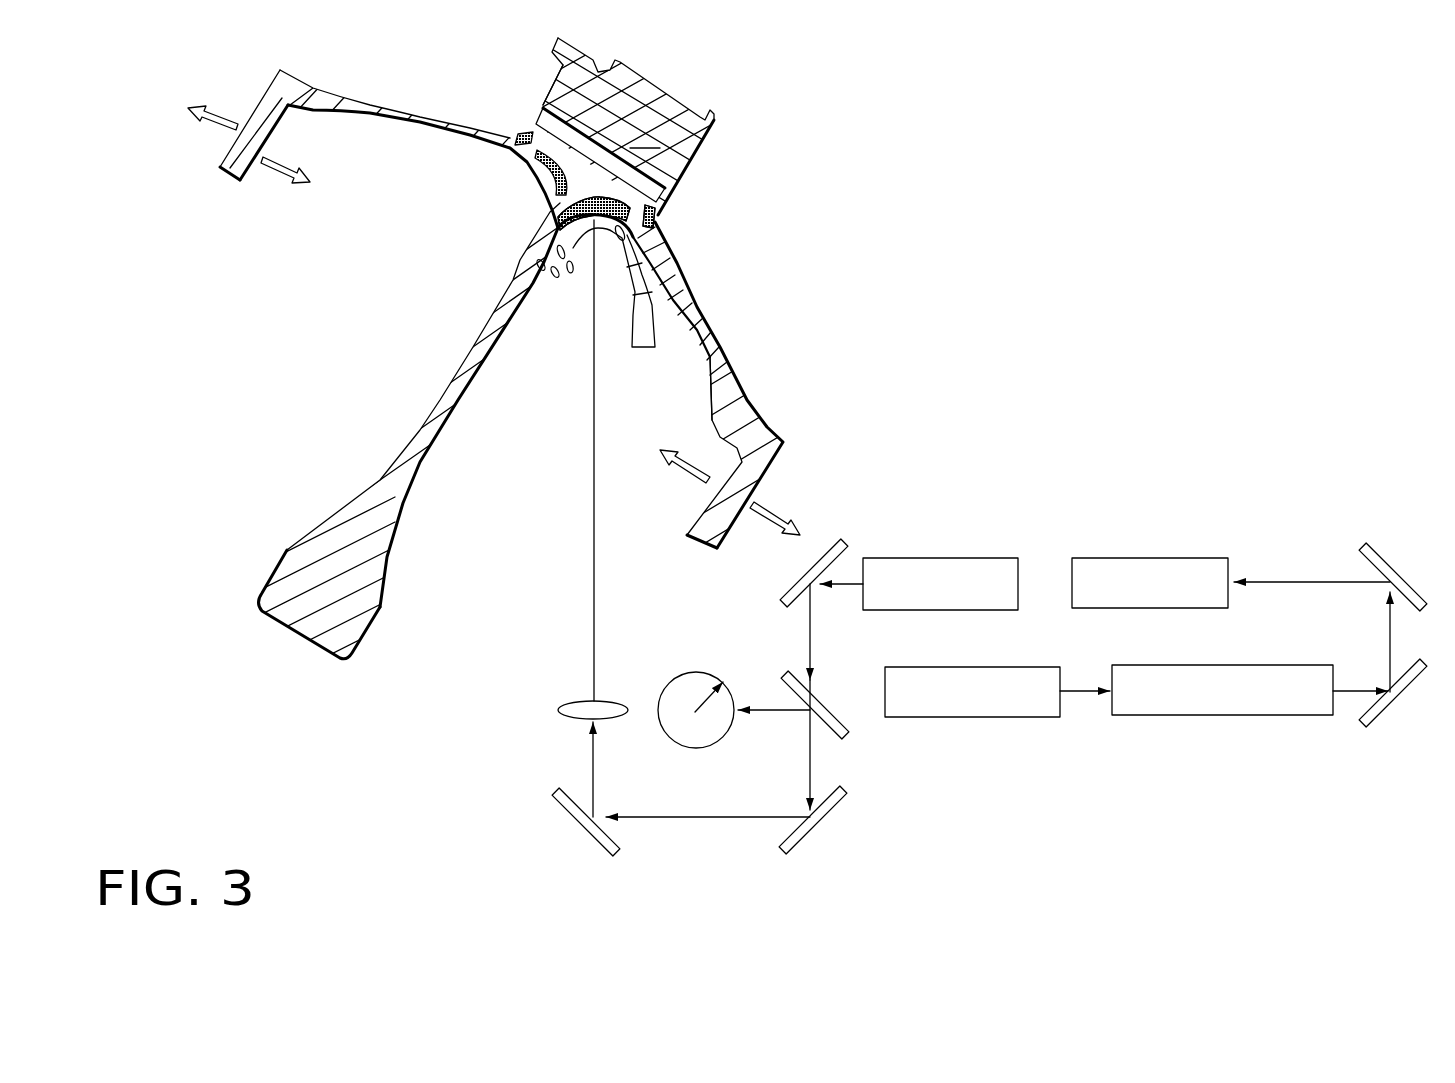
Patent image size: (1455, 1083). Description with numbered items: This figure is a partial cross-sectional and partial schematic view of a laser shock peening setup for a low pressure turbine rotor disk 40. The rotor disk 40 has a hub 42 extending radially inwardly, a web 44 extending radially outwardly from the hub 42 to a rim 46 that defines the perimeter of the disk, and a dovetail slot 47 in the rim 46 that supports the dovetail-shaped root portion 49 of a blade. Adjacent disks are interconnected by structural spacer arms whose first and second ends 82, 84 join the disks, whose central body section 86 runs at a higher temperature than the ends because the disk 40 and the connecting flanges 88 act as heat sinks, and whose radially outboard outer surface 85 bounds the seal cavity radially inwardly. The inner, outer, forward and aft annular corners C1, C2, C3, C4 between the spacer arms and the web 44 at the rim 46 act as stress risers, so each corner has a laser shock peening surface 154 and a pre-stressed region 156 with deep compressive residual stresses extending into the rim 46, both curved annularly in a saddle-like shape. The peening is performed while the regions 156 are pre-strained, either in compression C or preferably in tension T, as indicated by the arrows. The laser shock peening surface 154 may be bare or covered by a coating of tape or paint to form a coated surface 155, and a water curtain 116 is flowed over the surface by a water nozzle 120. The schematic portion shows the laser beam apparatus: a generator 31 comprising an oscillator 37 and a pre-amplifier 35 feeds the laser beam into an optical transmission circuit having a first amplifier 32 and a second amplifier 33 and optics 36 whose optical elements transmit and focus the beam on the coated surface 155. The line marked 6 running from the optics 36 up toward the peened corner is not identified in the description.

The rotor disk 40 is at (400, 446).
The hub 42 is at (290, 563).
The web 44 is at (467, 360).
The rim 46 is at (560, 147).
The dovetail slot 47 is at (600, 143).
The dovetail-shaped root portion 49 is at (625, 117).
The spacer arm first end 82 is at (510, 153).
The spacer arm second end 84 is at (313, 108).
The radially outboard outer surface 85 is at (727, 357).
The spacer arm body section 86 is at (460, 127).
The connecting flange 88 is at (240, 182).
The water curtain 116 is at (656, 258).
The water nozzle 120 is at (633, 280).
The laser shock peening surface 154 is at (660, 224).
The laser shock peening coated surface 155 is at (587, 228).
The pre-stressed region 156 is at (558, 208).
The inner annular corner C1 is at (540, 178).
The outer annular corner C2 is at (517, 138).
The forward annular corner C3 is at (557, 217).
The aft annular corner C4 is at (657, 218).
The tension T is at (499, 310).
The compression C is at (485, 325).
The laser beam 6 is at (594, 630).
The generator 31 is at (988, 702).
The first amplifier 32 is at (1197, 557).
The second amplifier 33 is at (913, 558).
The pre-amplifier 35 is at (1180, 717).
The optics 36 is at (648, 858).
The oscillator 37 is at (957, 717).